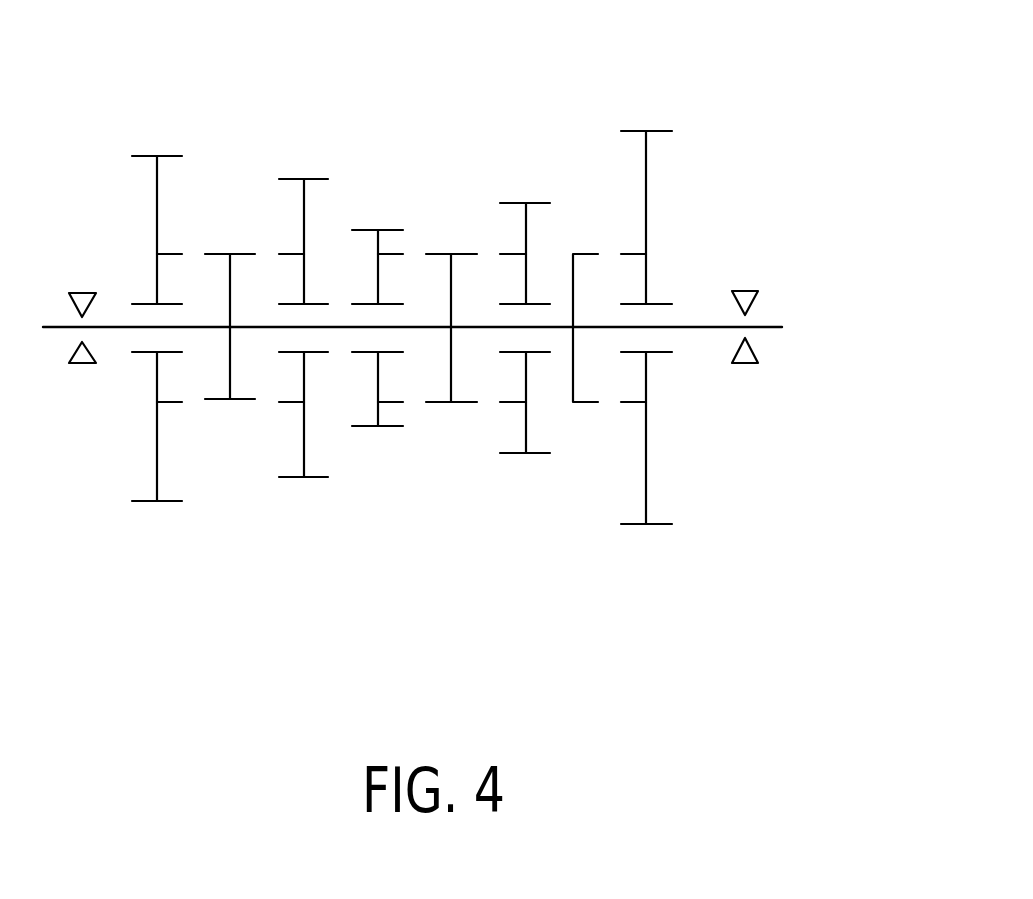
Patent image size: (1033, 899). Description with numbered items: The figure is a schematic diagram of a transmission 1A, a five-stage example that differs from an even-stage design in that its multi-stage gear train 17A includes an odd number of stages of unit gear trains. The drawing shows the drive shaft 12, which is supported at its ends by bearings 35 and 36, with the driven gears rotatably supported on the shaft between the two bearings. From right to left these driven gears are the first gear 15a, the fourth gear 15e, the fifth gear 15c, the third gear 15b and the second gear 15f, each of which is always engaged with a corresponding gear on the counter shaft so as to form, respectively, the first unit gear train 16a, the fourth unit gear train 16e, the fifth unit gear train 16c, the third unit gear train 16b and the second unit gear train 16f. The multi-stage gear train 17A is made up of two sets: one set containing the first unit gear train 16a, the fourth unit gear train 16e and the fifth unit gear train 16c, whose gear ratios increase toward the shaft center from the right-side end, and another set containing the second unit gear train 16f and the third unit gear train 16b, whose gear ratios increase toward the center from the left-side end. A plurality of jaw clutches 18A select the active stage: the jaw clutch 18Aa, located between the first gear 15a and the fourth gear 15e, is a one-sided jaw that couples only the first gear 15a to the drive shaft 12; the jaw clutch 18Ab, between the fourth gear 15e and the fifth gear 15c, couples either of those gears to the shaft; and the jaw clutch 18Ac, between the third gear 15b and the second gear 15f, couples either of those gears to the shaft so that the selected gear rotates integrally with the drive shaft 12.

The transmission 1A is at (712, 100).
The drive shaft 12 is at (772, 324).
The bearing 35 is at (745, 290).
The bearing 36 is at (80, 365).
The multi-stage gear train 17A is at (685, 505).
The first gear 15a is at (632, 523).
The third gear 15b is at (288, 477).
The fifth gear 15c is at (390, 426).
The fourth gear 15e is at (512, 453).
The second gear 15f is at (143, 501).
The first unit gear train 16a is at (638, 592).
The third unit gear train 16b is at (297, 547).
The fifth unit gear train 16c is at (375, 495).
The fourth unit gear train 16e is at (517, 520).
The second unit gear train 16f is at (149, 568).
The jaw clutches 18A is at (570, 150).
The jaw clutch 18Aa is at (588, 252).
The jaw clutch 18Ab is at (450, 252).
The jaw clutch 18Ac is at (230, 252).